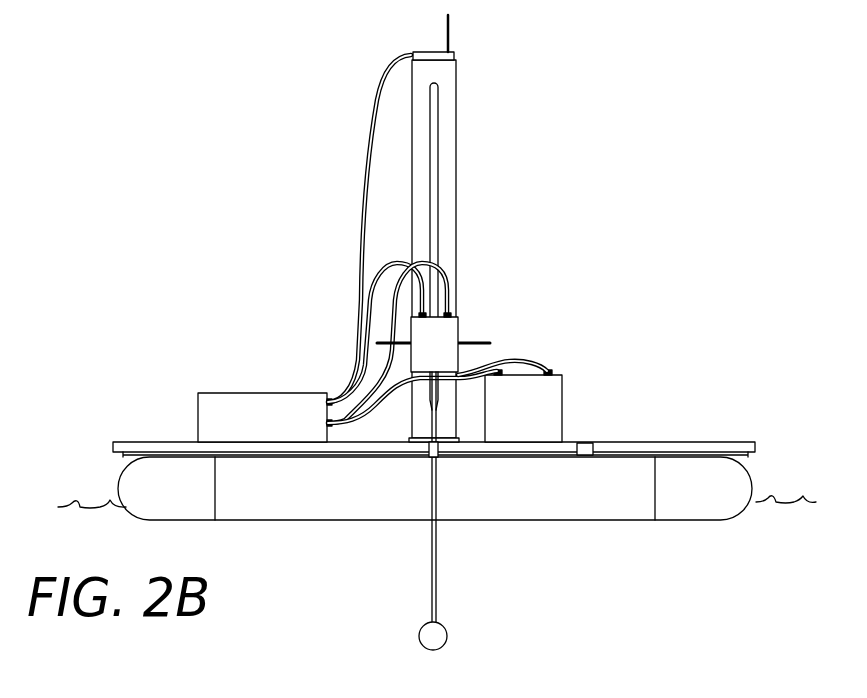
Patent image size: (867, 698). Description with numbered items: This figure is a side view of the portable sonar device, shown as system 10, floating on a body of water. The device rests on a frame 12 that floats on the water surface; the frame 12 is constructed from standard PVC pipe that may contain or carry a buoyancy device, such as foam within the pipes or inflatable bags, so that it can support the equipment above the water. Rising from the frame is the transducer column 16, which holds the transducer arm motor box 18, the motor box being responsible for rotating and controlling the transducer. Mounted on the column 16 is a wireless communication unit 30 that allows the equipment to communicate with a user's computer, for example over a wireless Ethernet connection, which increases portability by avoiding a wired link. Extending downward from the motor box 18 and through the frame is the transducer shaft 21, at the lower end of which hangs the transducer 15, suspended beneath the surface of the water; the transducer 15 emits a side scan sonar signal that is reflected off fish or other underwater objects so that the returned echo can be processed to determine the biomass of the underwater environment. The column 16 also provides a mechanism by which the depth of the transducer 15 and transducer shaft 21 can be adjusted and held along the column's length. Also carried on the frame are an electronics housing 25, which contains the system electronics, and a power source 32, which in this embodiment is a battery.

The system 10 is at (258, 263).
The frame 12 is at (138, 482).
The transducer 15 is at (436, 636).
The transducer column 16 is at (446, 100).
The transducer arm motor box 18 is at (446, 328).
The transducer shaft 21 is at (438, 558).
The electronics housing 25 is at (223, 408).
The wireless communication unit 30 is at (430, 52).
The power source 32 is at (540, 396).